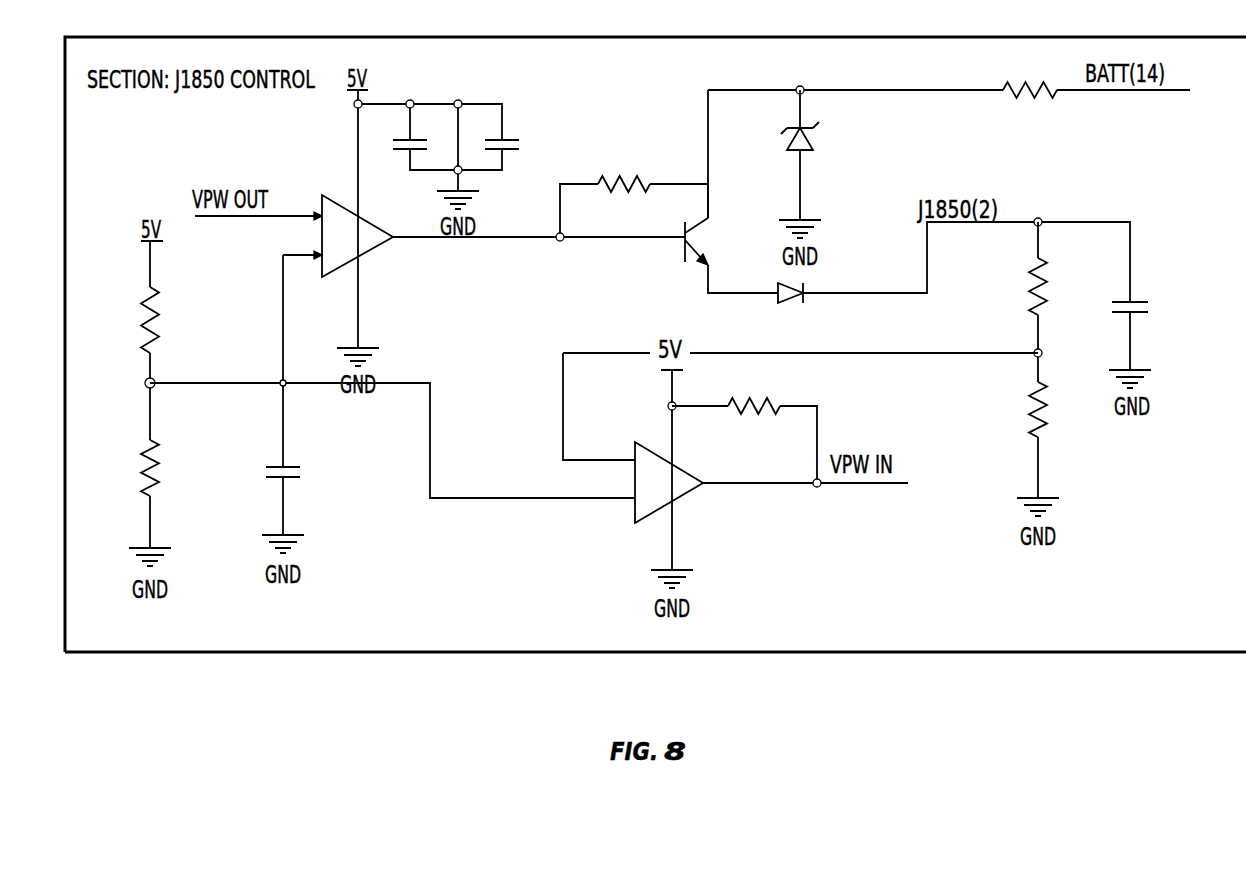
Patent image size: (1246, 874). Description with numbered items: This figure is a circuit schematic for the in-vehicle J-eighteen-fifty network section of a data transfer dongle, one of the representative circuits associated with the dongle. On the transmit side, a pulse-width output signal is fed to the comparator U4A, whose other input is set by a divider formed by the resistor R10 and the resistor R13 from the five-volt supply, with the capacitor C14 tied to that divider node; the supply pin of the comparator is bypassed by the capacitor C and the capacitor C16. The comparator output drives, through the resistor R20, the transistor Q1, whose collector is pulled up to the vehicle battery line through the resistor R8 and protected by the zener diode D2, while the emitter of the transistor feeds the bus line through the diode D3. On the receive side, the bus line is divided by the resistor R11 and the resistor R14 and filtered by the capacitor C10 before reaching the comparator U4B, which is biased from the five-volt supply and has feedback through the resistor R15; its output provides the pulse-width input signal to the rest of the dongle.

The capacitor C 10nF C is at (397, 143).
The capacitor C16 10uF C16 is at (516, 143).
The comparator U4A LM339MX/NOPB U4A is at (358, 238).
The resistor R20 1K R20 is at (624, 185).
The transistor Q1 MMBT2222ALT3 Q1 is at (644, 257).
The resistor R8 270 R8 is at (1030, 97).
The zener diode D2 NZH9V1B D2 is at (862, 155).
The diode D3 SIM-13-F D3 is at (796, 303).
The resistor R11 10K R11 is at (1056, 285).
The resistor R14 10K R14 is at (1056, 414).
The capacitor C10 1nF C10 is at (1148, 323).
The resistor R10 10K R10 is at (172, 320).
The resistor R13 2.7K R13 is at (174, 468).
The capacitor C14 0.022uF C14 is at (314, 473).
The resistor R15 1K R15 is at (754, 411).
The comparator U4B is at (666, 481).